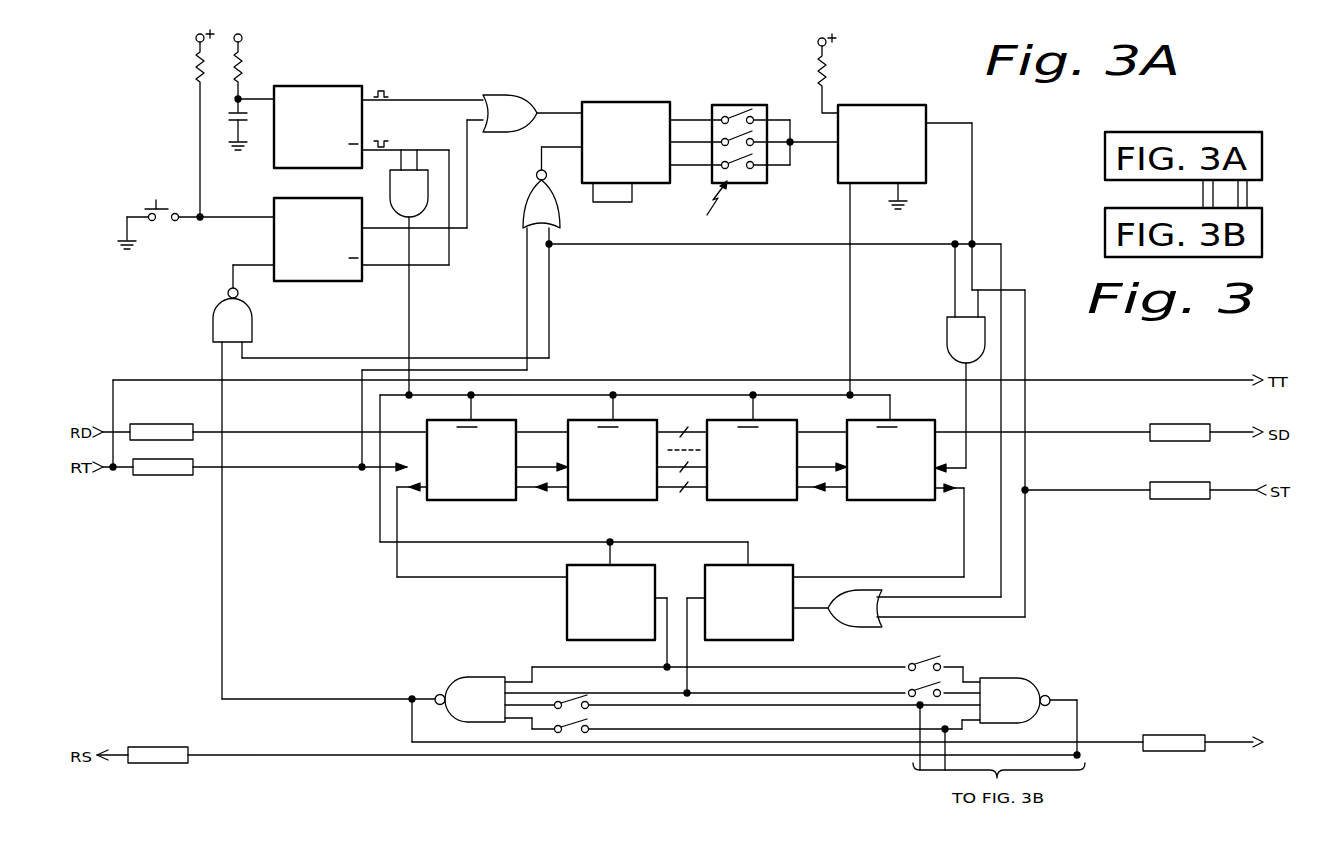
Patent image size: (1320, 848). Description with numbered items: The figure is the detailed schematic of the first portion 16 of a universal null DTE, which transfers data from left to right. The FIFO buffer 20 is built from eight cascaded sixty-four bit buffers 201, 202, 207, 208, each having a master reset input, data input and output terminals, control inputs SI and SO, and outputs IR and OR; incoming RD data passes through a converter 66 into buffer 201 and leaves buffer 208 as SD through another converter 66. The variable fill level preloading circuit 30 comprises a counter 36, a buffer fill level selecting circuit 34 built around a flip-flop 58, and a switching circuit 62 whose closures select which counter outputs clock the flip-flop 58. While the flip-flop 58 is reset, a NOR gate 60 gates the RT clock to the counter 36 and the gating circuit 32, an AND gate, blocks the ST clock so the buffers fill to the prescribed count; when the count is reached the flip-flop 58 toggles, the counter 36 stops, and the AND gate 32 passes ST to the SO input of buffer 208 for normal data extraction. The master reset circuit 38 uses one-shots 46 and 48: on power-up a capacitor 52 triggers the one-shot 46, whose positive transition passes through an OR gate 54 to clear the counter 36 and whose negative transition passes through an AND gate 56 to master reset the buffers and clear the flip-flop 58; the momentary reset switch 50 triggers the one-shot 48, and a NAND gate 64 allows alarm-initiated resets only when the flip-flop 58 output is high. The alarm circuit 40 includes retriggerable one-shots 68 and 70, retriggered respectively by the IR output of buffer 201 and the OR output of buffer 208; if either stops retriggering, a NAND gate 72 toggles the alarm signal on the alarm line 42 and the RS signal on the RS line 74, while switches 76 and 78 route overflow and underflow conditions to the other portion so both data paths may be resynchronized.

The first portion 16 is at (134, 308).
The FIFO buffer 20 is at (326, 511).
The variable fill level preloading circuit 30 is at (782, 51).
The gating circuit 32 is at (952, 330).
The buffer fill level selecting circuit 34 is at (709, 210).
The counter 36 is at (622, 112).
The master reset circuit 38 is at (441, 80).
The alarm circuit 40 is at (496, 630).
The alarm line 42 is at (220, 600).
The one-shot 46 is at (302, 97).
The one-shot 48 is at (282, 232).
The reset switch 50 is at (143, 205).
The capacitor 52 is at (233, 117).
The OR gate 54 is at (507, 100).
The AND gate 56 is at (408, 180).
The flip-flop 58 is at (888, 113).
The NOR gate 60 is at (532, 208).
The switching circuit 62 is at (728, 108).
The NAND gate 64 is at (223, 318).
The RS232-to-TTL and TTL-to-RS232 converters 66 is at (170, 416).
The retriggerable one-shot 68 is at (567, 563).
The retriggerable one-shot 70 is at (768, 568).
The NAND gate 72 is at (470, 685).
The RS line 74 is at (1228, 750).
The switches 76 is at (940, 653).
The switches 78 is at (584, 718).
The buffer 201 is at (493, 425).
The buffer 202 is at (632, 425).
The buffer 207 is at (770, 425).
The buffer 208 is at (904, 423).